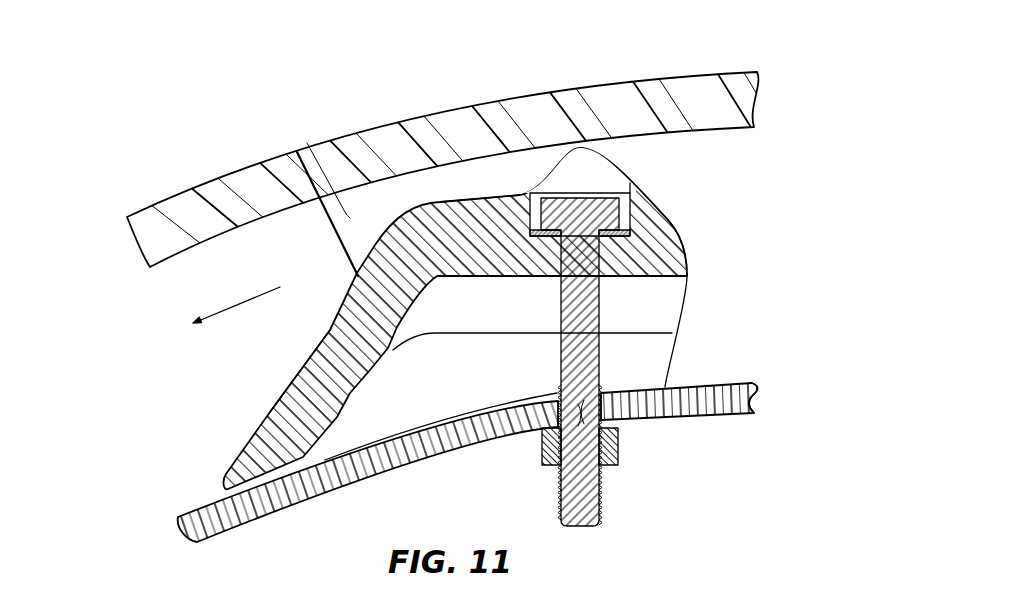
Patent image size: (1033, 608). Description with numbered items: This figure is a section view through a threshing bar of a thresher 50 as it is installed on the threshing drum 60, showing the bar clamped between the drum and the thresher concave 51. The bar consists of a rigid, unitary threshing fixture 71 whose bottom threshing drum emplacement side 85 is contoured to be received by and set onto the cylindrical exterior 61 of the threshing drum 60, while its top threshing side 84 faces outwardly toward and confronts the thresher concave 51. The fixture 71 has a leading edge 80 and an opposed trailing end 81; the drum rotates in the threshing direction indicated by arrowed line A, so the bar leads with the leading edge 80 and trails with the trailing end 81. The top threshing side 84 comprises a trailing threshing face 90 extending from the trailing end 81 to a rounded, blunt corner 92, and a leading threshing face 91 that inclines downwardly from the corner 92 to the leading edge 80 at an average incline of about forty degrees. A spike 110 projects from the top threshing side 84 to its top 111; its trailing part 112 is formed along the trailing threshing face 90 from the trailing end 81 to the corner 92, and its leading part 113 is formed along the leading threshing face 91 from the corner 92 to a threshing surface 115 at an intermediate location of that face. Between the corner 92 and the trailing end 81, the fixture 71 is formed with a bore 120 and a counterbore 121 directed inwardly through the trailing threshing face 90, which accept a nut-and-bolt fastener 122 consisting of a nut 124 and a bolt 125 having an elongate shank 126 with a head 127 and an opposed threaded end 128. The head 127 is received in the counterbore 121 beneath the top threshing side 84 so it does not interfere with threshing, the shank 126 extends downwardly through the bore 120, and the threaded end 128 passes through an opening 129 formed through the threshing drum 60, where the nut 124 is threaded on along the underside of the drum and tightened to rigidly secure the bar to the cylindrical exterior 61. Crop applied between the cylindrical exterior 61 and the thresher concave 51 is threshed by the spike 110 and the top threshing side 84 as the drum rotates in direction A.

The thresher 50 is at (777, 398).
The thresher concave 51 is at (707, 82).
The threshing drum 60 is at (754, 398).
The cylindrical exterior 61 is at (745, 383).
The threshing fixture 71 is at (689, 251).
The leading edge 80 is at (223, 490).
The trailing end 81 is at (681, 323).
The top threshing side 84 is at (500, 196).
The bottom threshing drum emplacement side 85 is at (435, 412).
The trailing threshing face 90 is at (647, 194).
The leading threshing face 91 is at (319, 343).
The corner 92 is at (438, 295).
The spike 110 is at (453, 190).
The top 111 is at (397, 172).
The trailing part 112 is at (600, 177).
The leading part 113 is at (297, 152).
The threshing surface 115 is at (326, 214).
The bore 120 is at (600, 259).
The counterbore 121 is at (542, 194).
The nut-and-bolt fastener 122 is at (602, 355).
The nut 124 is at (612, 467).
The bolt 125 is at (562, 368).
The shank 126 is at (601, 303).
The head 127 is at (602, 200).
The threaded end 128 is at (558, 507).
The opening 129 is at (607, 422).
The arrowed line A is at (240, 297).